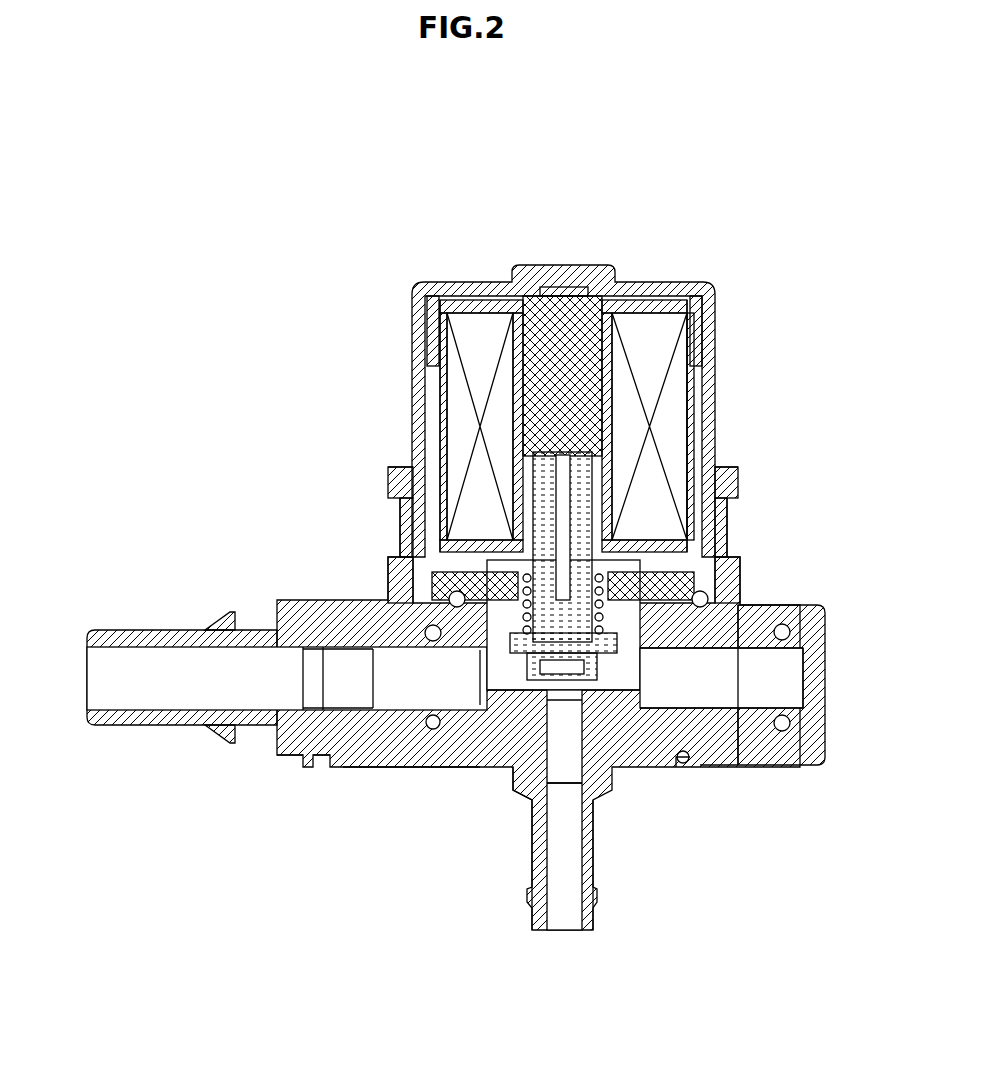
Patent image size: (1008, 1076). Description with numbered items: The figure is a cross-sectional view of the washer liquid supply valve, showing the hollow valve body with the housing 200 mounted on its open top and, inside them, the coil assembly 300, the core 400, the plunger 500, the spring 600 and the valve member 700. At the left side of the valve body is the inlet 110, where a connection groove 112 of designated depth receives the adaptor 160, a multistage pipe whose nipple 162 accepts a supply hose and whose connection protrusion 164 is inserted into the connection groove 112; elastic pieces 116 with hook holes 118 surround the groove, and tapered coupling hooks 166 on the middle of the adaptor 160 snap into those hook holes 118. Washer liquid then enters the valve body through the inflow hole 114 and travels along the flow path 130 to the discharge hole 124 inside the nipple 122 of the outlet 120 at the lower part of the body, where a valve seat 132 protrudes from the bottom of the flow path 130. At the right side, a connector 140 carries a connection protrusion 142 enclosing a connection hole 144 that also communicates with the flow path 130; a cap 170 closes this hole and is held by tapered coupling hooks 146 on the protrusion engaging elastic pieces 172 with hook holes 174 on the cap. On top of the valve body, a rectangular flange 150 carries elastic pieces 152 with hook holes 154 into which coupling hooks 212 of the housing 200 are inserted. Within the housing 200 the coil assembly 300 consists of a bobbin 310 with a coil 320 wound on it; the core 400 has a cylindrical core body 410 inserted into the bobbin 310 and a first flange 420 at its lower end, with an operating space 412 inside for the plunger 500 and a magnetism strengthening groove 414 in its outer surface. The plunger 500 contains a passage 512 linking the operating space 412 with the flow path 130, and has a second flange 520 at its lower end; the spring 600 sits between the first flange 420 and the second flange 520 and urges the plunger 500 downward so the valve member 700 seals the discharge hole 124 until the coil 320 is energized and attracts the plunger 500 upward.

The inlet 110 is at (423, 768).
The connection groove 112 is at (373, 768).
The inflow hole 114 is at (458, 768).
The elastic pieces 116 is at (345, 768).
The hook hole 118 is at (350, 768).
The outlet 120 is at (518, 790).
The nipple 122 is at (597, 880).
The discharge hole 124 is at (618, 770).
The flow path 130 is at (740, 605).
The valve seat 132 is at (645, 680).
The connector 140 is at (650, 770).
The connection protrusion 142 is at (770, 770).
The connection hole 144 is at (763, 708).
The coupling hooks 146 is at (713, 770).
The flange 150 is at (740, 570).
The elastic pieces 152 is at (740, 475).
The hook holes 154 is at (740, 503).
The adaptor 160 is at (151, 675).
The nipple 162 is at (128, 630).
The connection protrusion 164 is at (445, 598).
The coupling hooks 166 is at (360, 768).
The cap 170 is at (737, 626).
The elastic pieces 172 is at (688, 768).
The hook hole 174 is at (712, 768).
The housing 200 is at (705, 297).
The coupling hooks 212 is at (740, 528).
The coil assembly 300 is at (447, 426).
The bobbin 310 is at (520, 415).
The coil 320 is at (455, 388).
The core 400 is at (572, 428).
The core body 410 is at (590, 374).
The operating space 412 is at (530, 445).
The magnetism strengthening groove 414 is at (413, 478).
The first flange 420 is at (613, 560).
The plunger 500 is at (540, 507).
The passage 512 is at (568, 478).
The second flange 520 is at (632, 633).
The spring 600 is at (470, 650).
The valve member 700 is at (553, 680).